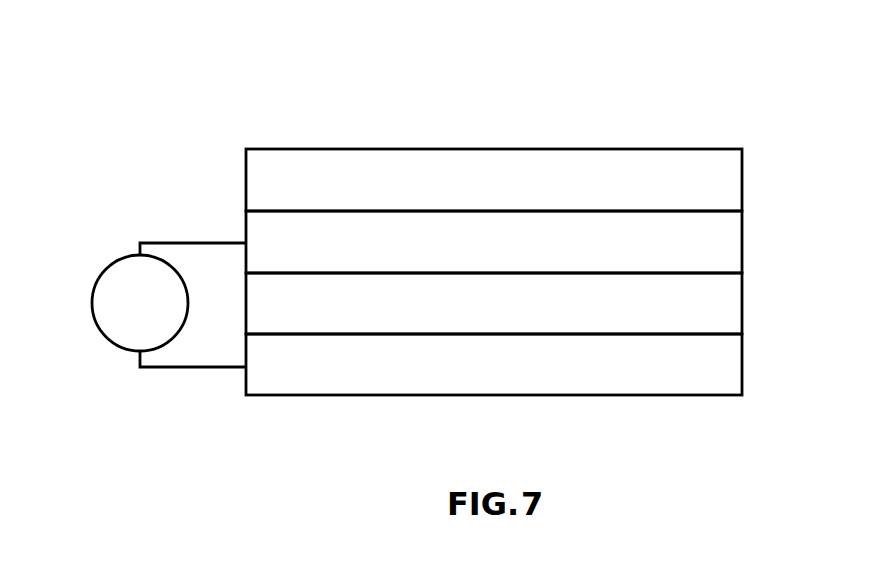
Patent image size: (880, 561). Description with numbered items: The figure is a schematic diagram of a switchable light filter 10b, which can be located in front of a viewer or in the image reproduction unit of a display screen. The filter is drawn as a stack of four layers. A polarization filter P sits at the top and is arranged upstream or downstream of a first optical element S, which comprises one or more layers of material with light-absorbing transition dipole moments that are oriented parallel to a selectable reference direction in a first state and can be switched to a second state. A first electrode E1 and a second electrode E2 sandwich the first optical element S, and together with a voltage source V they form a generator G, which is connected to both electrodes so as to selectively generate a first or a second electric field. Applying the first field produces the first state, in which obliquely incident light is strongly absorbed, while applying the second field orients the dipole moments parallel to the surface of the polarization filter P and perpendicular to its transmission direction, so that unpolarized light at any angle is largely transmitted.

The switchable light filter 10b is at (501, 211).
The generator G is at (159, 268).
The polarization filter P is at (494, 180).
The first electrode E1 is at (494, 242).
The first optical element S is at (494, 303).
The second electrode E2 is at (494, 364).
The voltage source V is at (175, 238).